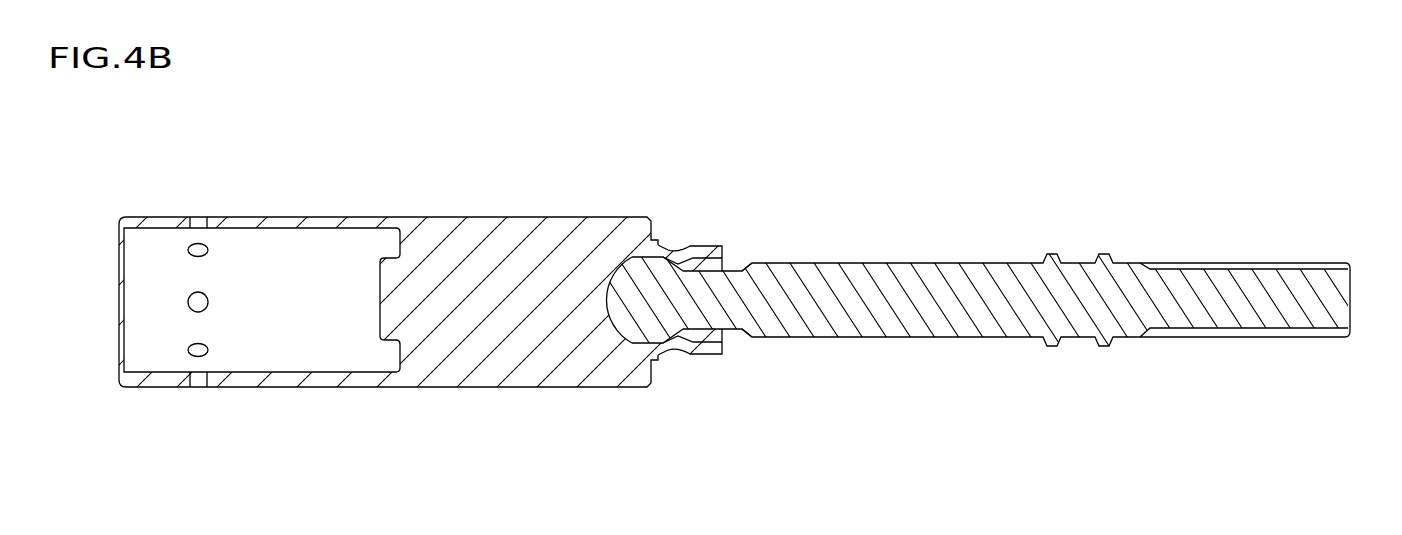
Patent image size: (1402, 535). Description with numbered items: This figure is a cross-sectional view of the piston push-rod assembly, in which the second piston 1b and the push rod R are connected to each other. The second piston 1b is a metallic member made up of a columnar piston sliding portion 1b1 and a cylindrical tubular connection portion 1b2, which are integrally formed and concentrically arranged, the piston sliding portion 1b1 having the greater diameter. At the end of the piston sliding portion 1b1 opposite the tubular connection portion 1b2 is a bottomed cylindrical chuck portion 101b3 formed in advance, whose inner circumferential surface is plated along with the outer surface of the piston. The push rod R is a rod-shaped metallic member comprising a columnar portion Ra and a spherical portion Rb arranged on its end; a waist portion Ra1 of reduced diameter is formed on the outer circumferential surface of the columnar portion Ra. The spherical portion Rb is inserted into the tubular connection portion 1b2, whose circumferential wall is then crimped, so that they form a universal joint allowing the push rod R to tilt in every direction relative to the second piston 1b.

The second piston 1b is at (526, 172).
The piston sliding portion 1b1 is at (487, 370).
The tubular connection portion 1b2 is at (708, 348).
The chuck portion 101b3 is at (256, 372).
The push rod R is at (1003, 186).
The columnar portion Ra is at (918, 320).
The waist portion Ra1 is at (745, 336).
The spherical portion Rb is at (663, 318).